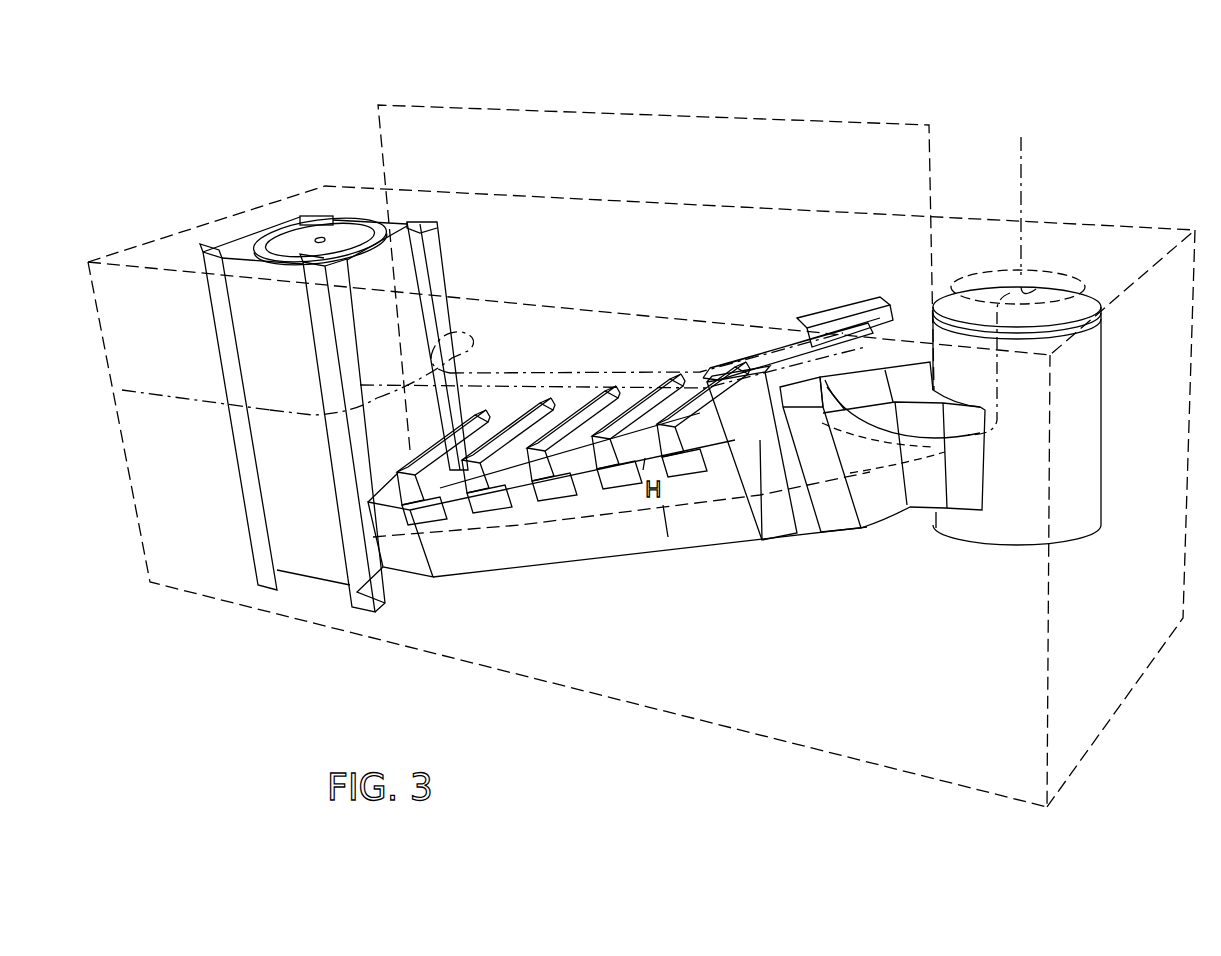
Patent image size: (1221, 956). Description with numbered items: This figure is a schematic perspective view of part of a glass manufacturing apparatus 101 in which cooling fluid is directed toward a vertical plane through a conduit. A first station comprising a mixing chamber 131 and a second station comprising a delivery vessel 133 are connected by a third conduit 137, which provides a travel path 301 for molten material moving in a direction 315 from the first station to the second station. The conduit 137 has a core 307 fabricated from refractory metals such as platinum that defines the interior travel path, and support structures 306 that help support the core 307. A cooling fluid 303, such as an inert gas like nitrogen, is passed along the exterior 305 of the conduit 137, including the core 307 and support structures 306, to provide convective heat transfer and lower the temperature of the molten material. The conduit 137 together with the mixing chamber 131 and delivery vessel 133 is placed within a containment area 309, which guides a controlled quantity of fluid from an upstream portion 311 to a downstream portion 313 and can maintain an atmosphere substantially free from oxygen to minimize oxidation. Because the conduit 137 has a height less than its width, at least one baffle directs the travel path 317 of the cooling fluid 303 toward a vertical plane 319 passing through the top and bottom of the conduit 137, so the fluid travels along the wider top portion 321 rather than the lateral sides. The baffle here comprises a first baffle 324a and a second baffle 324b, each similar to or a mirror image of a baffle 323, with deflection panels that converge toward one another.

The glass manufacturing apparatus 101 is at (1118, 128).
The mixing chamber 131 is at (282, 526).
The delivery vessel 133 is at (1075, 565).
The third conduit 137 is at (647, 565).
The travel path 301 is at (452, 538).
The cooling fluid 303 is at (1018, 157).
The exterior 305 is at (697, 491).
The support structures 306 is at (734, 366).
The core 307 is at (602, 560).
The containment area 309 is at (823, 752).
The upstream portion 311 is at (1080, 278).
The downstream portion 313 is at (157, 442).
The direction 315 is at (545, 527).
The travel path of the cooling fluid 317 is at (1023, 201).
The vertical plane 319 is at (597, 110).
The top portion 321 is at (655, 400).
The baffle 323 is at (813, 527).
The first baffle 324a is at (793, 532).
The second baffle 324b is at (840, 302).